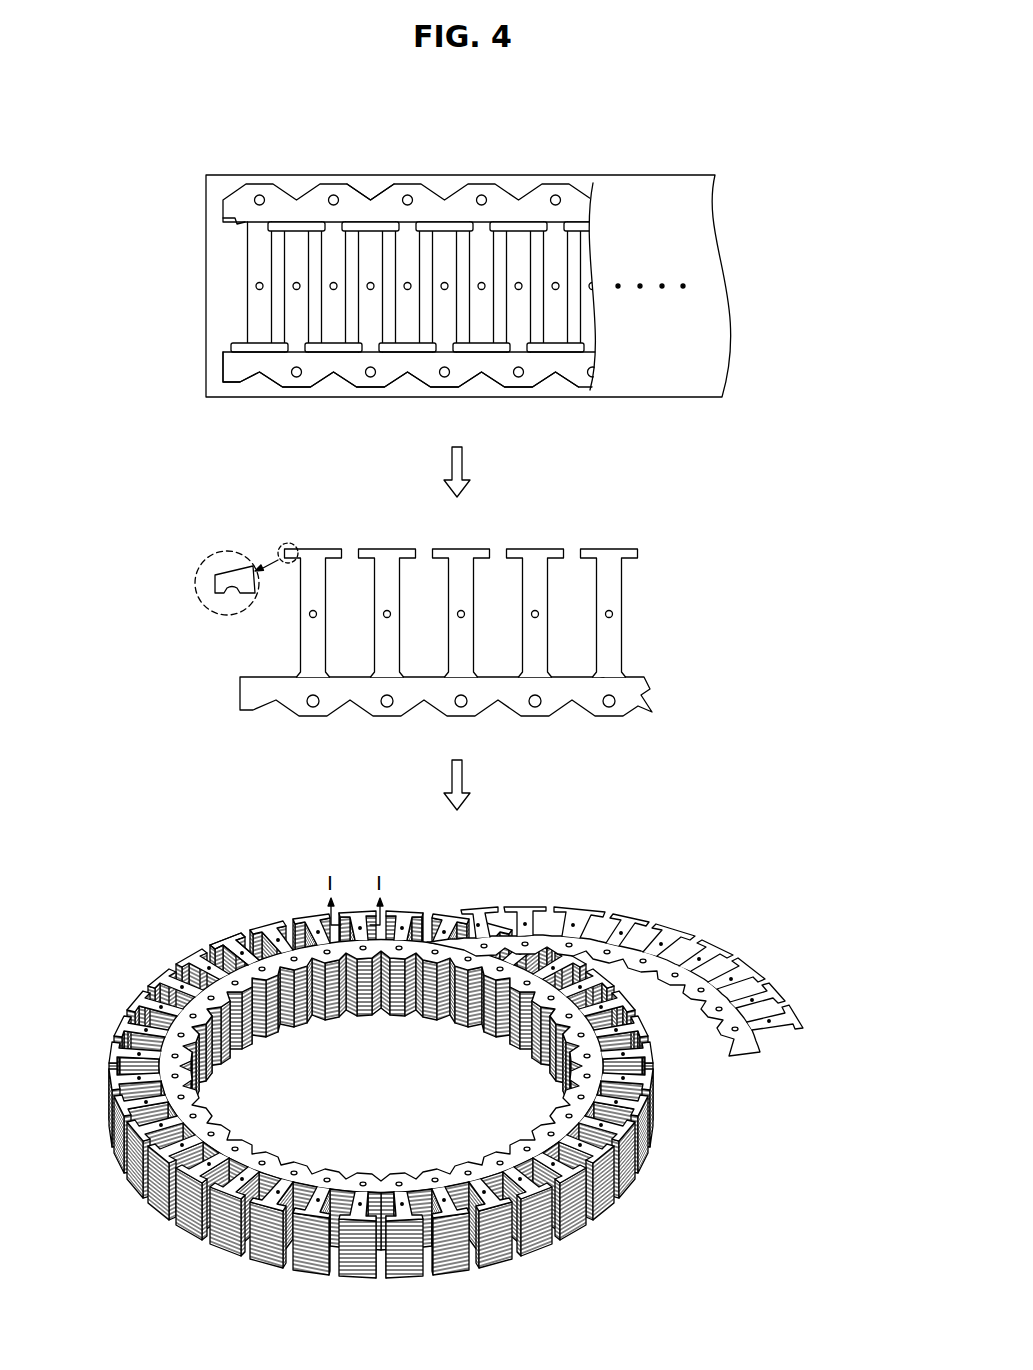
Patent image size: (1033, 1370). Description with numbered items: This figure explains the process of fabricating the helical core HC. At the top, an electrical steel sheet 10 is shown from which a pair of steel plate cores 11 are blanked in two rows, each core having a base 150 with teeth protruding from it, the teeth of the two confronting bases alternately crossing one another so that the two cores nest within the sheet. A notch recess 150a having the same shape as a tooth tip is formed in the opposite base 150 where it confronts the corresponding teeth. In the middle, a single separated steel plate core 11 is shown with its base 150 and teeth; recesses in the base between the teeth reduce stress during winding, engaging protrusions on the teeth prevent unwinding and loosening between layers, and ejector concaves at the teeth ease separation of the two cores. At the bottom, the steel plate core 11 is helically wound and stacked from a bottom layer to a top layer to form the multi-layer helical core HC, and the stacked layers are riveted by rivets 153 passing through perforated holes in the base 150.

The electrical steel sheet 10 is at (199, 311).
The steel plate core 11 is at (584, 181).
The base 150 is at (648, 690).
The notch recess 150a is at (231, 210).
The rivet 153 is at (327, 1176).
The helical core HC is at (712, 1121).